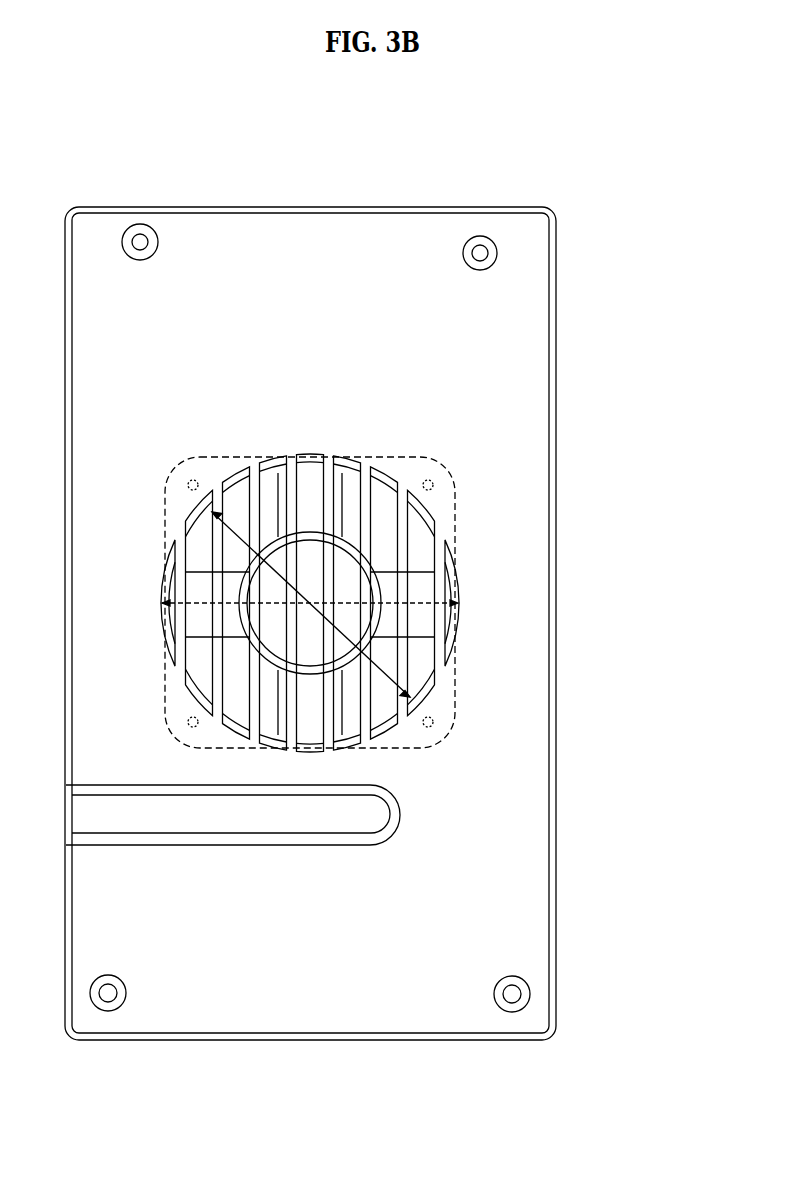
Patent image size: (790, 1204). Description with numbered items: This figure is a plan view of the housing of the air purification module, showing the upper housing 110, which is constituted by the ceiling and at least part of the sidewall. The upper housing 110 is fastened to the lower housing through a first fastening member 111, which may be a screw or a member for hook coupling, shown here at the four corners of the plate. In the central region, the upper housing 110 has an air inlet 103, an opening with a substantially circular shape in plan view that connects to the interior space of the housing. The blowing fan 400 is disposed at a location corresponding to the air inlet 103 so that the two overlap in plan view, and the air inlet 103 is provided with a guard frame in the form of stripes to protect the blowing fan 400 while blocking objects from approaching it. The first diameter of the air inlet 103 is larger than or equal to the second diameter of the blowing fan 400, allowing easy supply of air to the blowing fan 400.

The blowing fan 400 is at (419, 603).
The air inlet 103 is at (418, 668).
The upper housing 110 is at (522, 812).
The first fastening member 111 is at (512, 994).